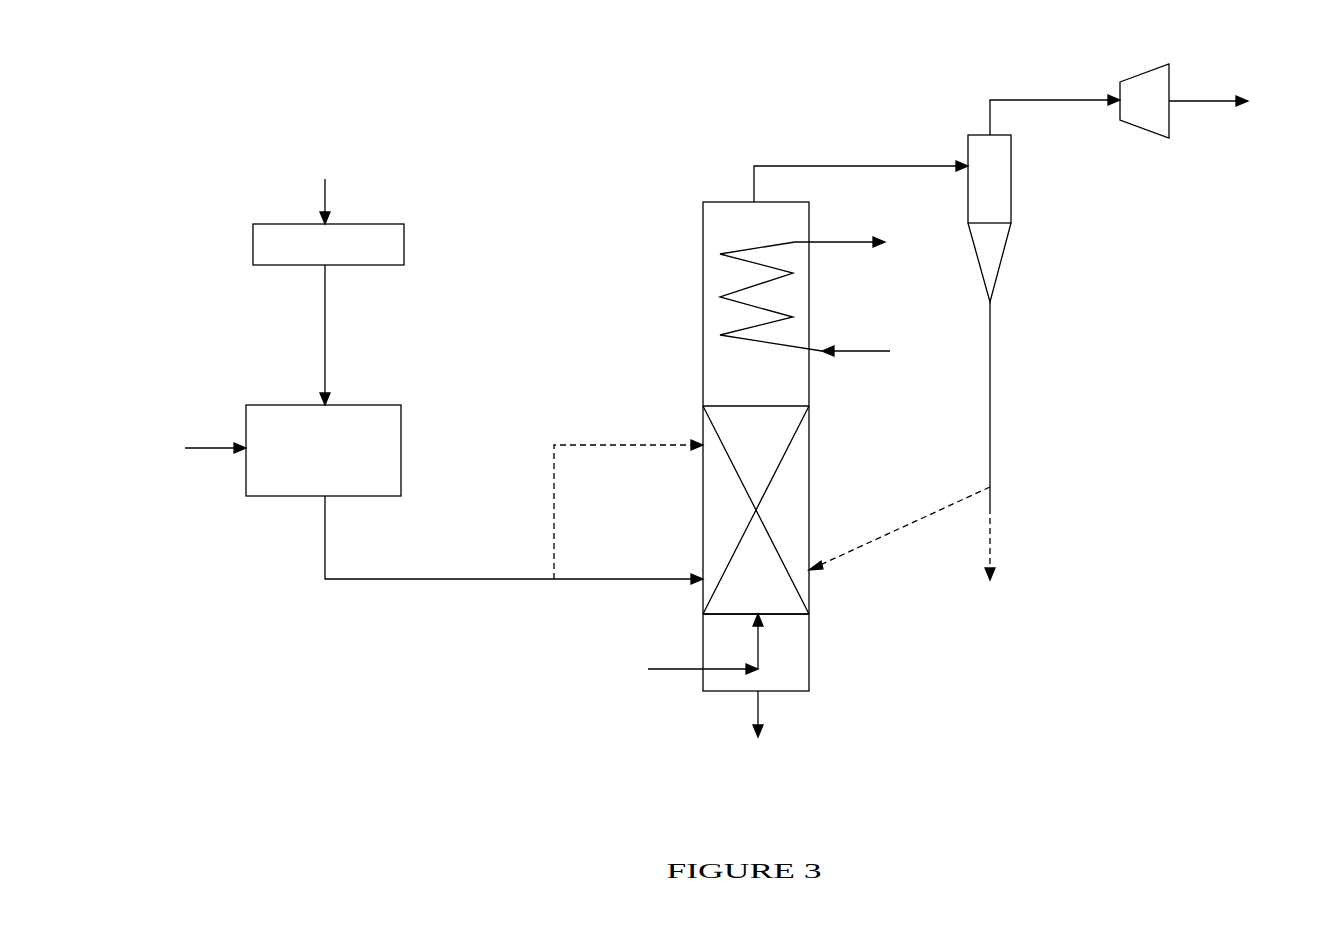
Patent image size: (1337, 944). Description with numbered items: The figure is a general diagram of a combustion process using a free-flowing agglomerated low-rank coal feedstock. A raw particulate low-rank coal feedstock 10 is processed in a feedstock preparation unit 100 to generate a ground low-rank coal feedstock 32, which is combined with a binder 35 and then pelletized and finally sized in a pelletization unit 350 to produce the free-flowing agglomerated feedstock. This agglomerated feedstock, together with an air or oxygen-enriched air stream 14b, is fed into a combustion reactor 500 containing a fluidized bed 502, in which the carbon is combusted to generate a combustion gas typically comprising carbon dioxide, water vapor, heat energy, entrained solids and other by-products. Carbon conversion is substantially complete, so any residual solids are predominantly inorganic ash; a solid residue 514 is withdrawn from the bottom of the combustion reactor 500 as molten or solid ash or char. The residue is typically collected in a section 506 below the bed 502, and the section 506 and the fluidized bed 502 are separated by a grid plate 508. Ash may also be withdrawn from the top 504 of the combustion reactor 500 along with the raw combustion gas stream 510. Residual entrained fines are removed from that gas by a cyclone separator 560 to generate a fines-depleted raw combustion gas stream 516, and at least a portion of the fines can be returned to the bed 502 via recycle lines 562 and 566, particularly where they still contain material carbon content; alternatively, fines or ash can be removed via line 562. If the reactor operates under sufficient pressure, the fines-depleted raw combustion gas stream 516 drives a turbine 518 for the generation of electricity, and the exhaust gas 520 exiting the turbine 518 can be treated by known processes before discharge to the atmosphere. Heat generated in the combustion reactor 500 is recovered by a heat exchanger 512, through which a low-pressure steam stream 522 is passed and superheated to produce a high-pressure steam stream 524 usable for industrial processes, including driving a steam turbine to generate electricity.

The raw particulate low-rank coal feedstock 10 is at (322, 182).
The feedstock preparation unit 100 is at (328, 244).
The ground low-rank coal feedstock 32 is at (325, 340).
The binder 35 is at (195, 449).
The pelletization unit 350 is at (323, 450).
The combustion reactor 500 is at (703, 220).
The top of combustion reactor 504 is at (717, 360).
The fluidized bed 502 is at (795, 468).
The section below bed 506 is at (720, 652).
The grid plate 508 is at (809, 614).
The raw combustion gas stream 510 is at (752, 181).
The heat exchanger 512 is at (722, 291).
The high-pressure steam stream 524 is at (866, 242).
The low-pressure steam stream 522 is at (879, 345).
The air or oxygen-enriched air stream 14b is at (680, 648).
The solid residue 514 is at (755, 733).
The cyclone separator 560 is at (1011, 210).
The fines-depleted raw combustion gas stream 516 is at (995, 117).
The turbine 518 is at (1143, 86).
The exhaust gas 520 is at (1234, 96).
The recycle line 562 is at (990, 360).
The recycle line 566 is at (880, 548).